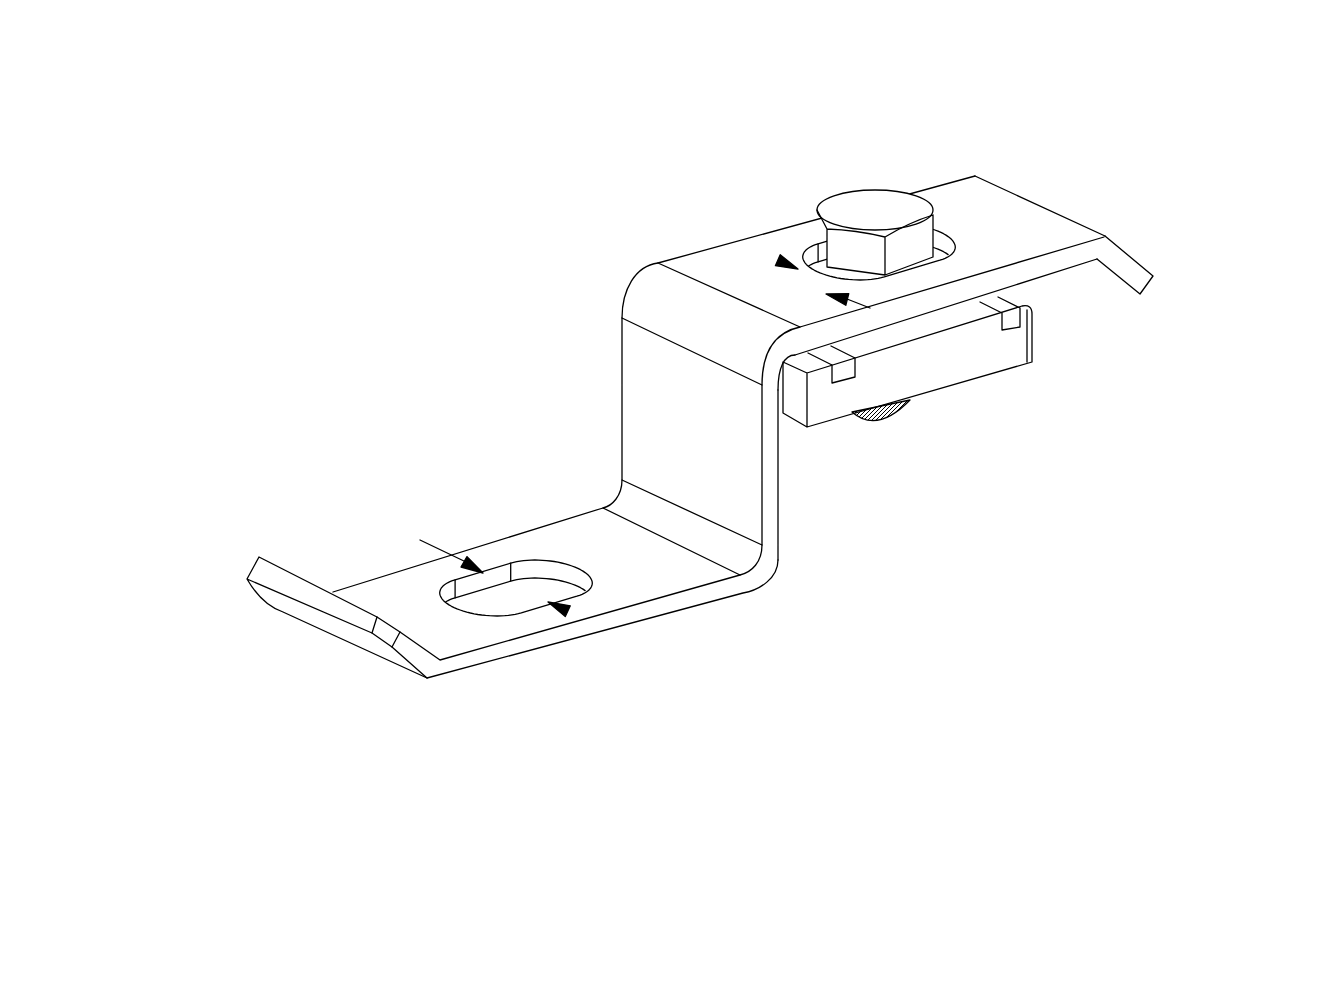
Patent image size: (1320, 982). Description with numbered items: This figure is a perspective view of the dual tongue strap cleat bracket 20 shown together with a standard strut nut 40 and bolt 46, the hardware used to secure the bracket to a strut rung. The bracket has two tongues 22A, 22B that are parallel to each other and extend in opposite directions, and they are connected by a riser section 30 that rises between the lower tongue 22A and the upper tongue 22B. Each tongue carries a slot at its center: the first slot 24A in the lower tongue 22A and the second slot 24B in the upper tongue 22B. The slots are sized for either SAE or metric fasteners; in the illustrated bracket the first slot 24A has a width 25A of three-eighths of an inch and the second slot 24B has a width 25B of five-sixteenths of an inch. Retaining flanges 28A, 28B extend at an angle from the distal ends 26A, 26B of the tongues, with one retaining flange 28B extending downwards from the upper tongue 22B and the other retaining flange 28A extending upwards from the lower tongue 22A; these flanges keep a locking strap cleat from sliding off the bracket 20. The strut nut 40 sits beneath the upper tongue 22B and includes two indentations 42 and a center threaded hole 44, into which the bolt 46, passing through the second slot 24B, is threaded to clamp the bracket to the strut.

The dual tongue strap cleat bracket 20 is at (415, 107).
The lower tongue 22A is at (418, 590).
The upper tongue 22B is at (780, 242).
The first slot 24A is at (547, 593).
The second slot 24B is at (947, 238).
The width of first slot 25A is at (567, 611).
The width of second slot 25B is at (778, 260).
The distal end of lower tongue 26A is at (437, 668).
The distal end of upper tongue 26B is at (1063, 217).
The retaining flange 28A is at (308, 613).
The retaining flange 28B is at (1130, 268).
The riser section 30 is at (698, 460).
The strut nut 40 is at (985, 348).
The indentations 42 is at (1018, 313).
The center threaded hole 44 is at (870, 308).
The bolt 46 is at (880, 207).